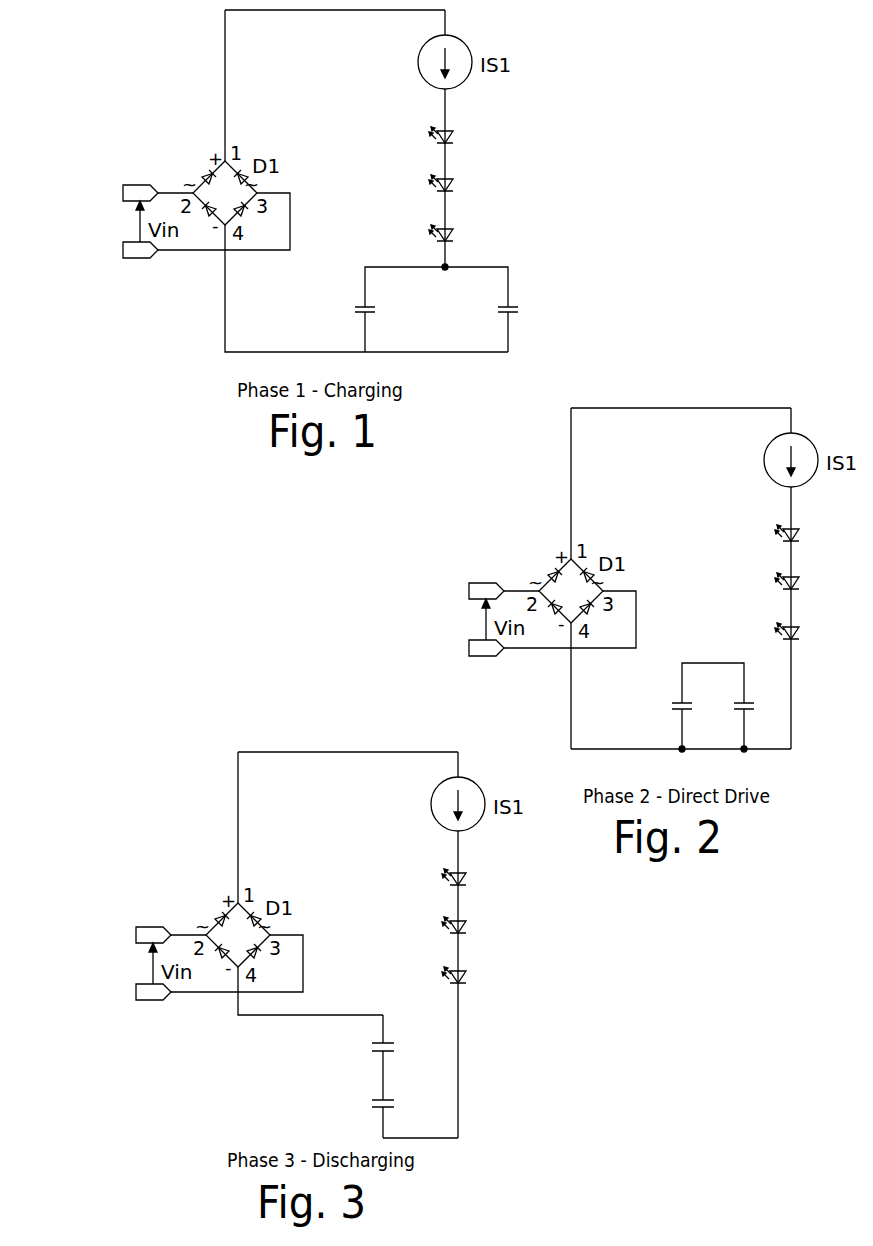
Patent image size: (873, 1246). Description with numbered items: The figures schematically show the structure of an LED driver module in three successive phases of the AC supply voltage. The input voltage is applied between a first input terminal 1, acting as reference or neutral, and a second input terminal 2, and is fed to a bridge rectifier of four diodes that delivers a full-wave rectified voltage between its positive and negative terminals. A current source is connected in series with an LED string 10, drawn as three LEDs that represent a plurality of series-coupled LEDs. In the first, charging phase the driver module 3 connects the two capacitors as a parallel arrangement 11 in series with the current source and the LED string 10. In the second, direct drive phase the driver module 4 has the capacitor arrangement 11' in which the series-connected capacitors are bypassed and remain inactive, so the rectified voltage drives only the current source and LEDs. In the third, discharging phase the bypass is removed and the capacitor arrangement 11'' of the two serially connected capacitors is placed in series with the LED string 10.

In FIG. 1, the first input terminal 1 is at (123, 250).
In FIG. 2, the first input terminal 1 is at (445, 626).
In FIG. 3, the first input terminal 1 is at (112, 970).
In FIG. 1, the second input terminal 2 is at (123, 193).
In FIG. 2, the second input terminal 2 is at (444, 570).
In FIG. 3, the second input terminal 2 is at (111, 914).
In FIG. 1, the driver module 3 is at (222, 369).
In FIG. 2, the LED driver module 4 is at (796, 760).
In FIG. 3, the LED driver module 4 is at (440, 1149).
In FIG. 1, the LED string 10 is at (416, 133).
In FIG. 2, the LED string 10 is at (759, 595).
In FIG. 3, the LED string 10 is at (426, 939).
In FIG. 1, the parallel arrangement 11 is at (424, 332).
In FIG. 2, the capacitor arrangement 11' is at (715, 725).
In FIG. 3, the capacitor arrangement 11'' is at (348, 1076).